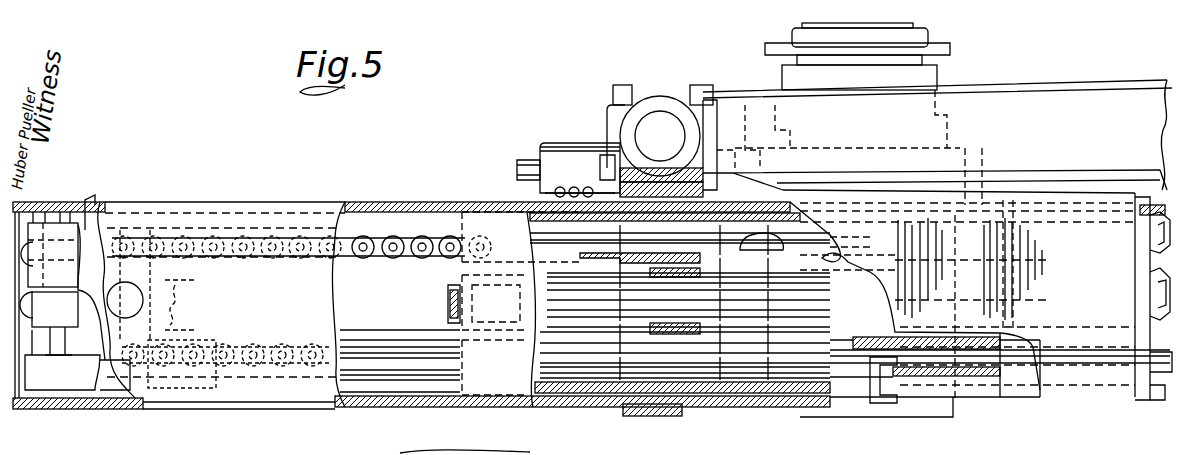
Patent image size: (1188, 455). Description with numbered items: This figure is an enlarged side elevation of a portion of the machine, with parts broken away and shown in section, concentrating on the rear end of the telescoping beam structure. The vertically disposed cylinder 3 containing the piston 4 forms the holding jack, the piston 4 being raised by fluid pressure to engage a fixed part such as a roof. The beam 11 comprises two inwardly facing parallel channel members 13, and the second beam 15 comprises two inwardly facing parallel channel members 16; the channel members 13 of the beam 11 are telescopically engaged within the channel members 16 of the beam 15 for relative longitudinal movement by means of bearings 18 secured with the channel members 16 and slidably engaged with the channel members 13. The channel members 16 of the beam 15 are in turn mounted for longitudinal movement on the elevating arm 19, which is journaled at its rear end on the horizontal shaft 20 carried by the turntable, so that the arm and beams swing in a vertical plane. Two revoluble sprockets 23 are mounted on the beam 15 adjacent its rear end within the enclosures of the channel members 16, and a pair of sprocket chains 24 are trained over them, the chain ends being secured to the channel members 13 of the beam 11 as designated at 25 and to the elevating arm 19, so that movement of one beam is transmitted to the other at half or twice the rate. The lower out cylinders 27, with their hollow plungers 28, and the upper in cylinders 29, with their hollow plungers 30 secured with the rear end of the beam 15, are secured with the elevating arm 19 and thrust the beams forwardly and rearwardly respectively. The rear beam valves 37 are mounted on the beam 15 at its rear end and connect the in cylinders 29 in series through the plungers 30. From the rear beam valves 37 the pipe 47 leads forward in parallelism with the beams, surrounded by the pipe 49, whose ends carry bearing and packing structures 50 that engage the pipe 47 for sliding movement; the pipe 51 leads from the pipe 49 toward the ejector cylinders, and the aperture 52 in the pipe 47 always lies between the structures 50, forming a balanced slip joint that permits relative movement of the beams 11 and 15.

The cylinder 3 is at (915, 25).
The piston 4 is at (937, 72).
The beam 11 is at (697, 383).
The channel members 13 is at (593, 392).
The second beam 15 is at (243, 204).
The channel members 16 is at (392, 202).
The bearings 18 is at (513, 404).
The elevating arm 19 is at (1097, 92).
The horizontal shaft 20 is at (617, 141).
The sprockets 23 is at (178, 303).
The sprocket chains 24 is at (383, 252).
The chain end securement 25 is at (477, 252).
The out cylinders 27 is at (716, 310).
The hollow plungers 28 is at (748, 333).
The in cylinders 29 is at (843, 252).
The plungers 30 is at (553, 242).
The rear beam valves 37 is at (88, 205).
The pipe 47 is at (1045, 395).
The pipe 49 is at (813, 374).
The bearing and packing structures 50 is at (997, 377).
The pipe 51 is at (982, 380).
The aperture 52 is at (877, 392).